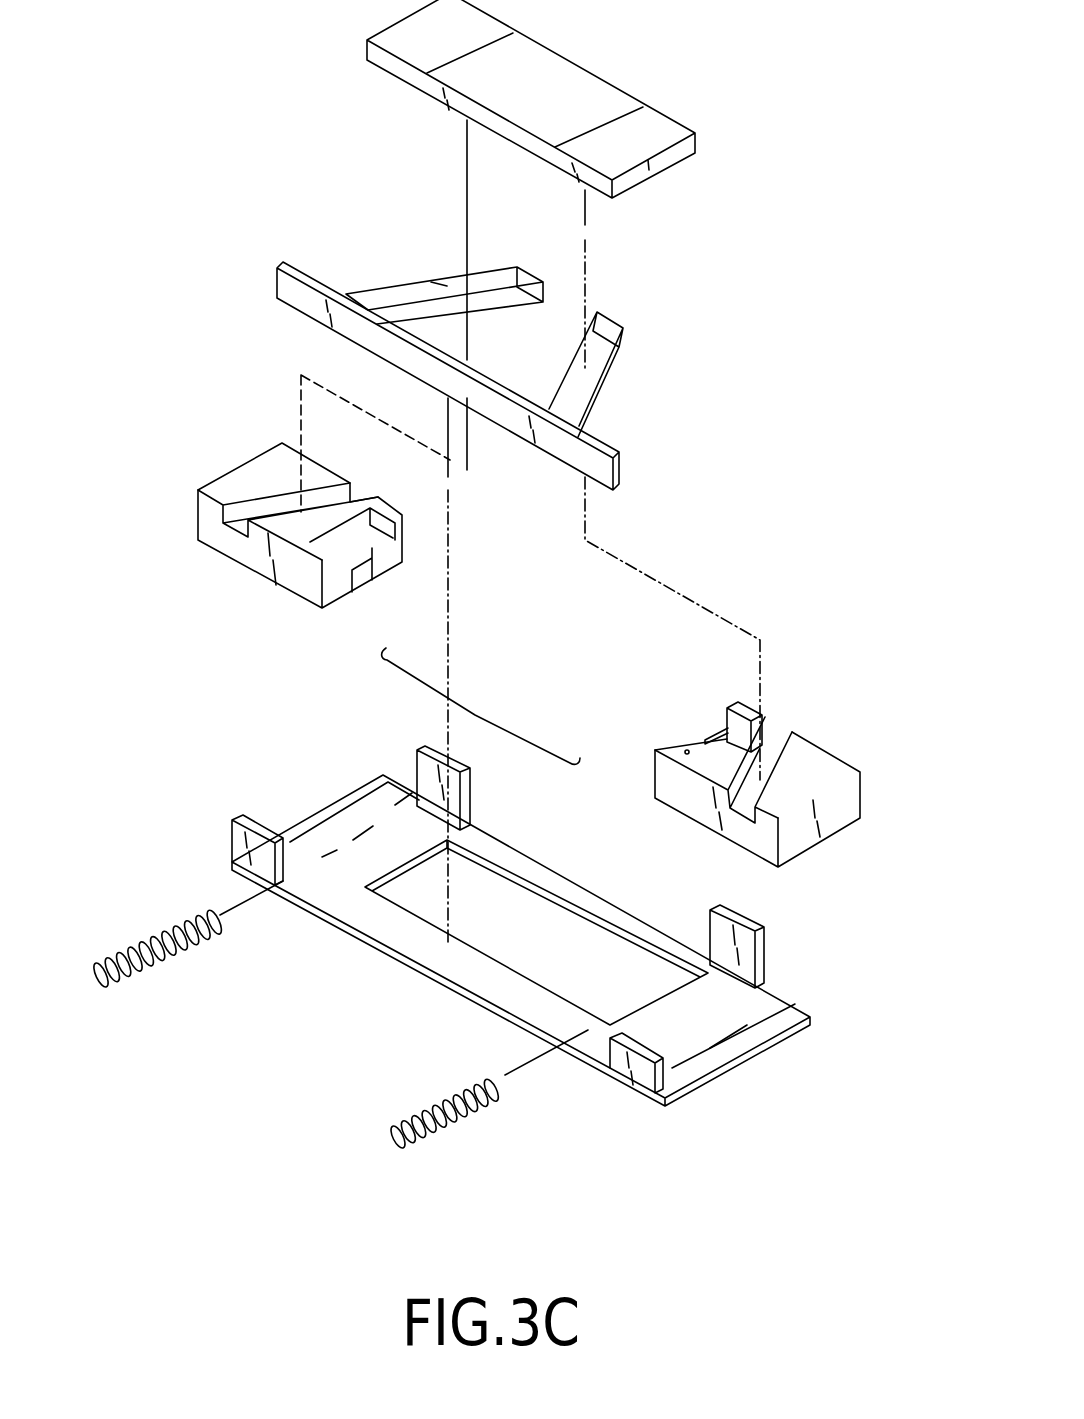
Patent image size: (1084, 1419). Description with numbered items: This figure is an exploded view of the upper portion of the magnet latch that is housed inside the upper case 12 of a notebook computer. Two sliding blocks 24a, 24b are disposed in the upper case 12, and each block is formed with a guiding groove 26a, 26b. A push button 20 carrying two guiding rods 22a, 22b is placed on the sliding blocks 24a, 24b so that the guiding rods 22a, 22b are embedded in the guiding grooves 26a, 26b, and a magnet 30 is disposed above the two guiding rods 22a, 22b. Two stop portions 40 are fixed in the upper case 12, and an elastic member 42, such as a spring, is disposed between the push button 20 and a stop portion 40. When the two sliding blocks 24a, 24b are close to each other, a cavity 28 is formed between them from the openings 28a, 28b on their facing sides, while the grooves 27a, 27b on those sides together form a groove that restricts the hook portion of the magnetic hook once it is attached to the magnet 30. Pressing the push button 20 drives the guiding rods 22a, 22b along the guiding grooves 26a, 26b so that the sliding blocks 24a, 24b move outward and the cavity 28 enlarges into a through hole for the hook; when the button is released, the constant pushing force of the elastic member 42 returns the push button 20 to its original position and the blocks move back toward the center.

The upper case 12 is at (551, 959).
The push button 20 is at (305, 300).
The guiding rod 22a is at (582, 390).
The guiding rod 22b is at (430, 290).
The sliding block 24a is at (748, 755).
The sliding block 24b is at (289, 527).
The guiding groove 26a is at (748, 798).
The guiding groove 26b is at (245, 528).
The groove 27a is at (723, 731).
The groove 27b is at (372, 540).
The cavity 28 is at (481, 706).
The opening 28a is at (686, 750).
The opening 28b is at (360, 582).
The magnet 30 is at (560, 80).
The stop portion 40 is at (755, 931).
The elastic member 42 is at (470, 1137).